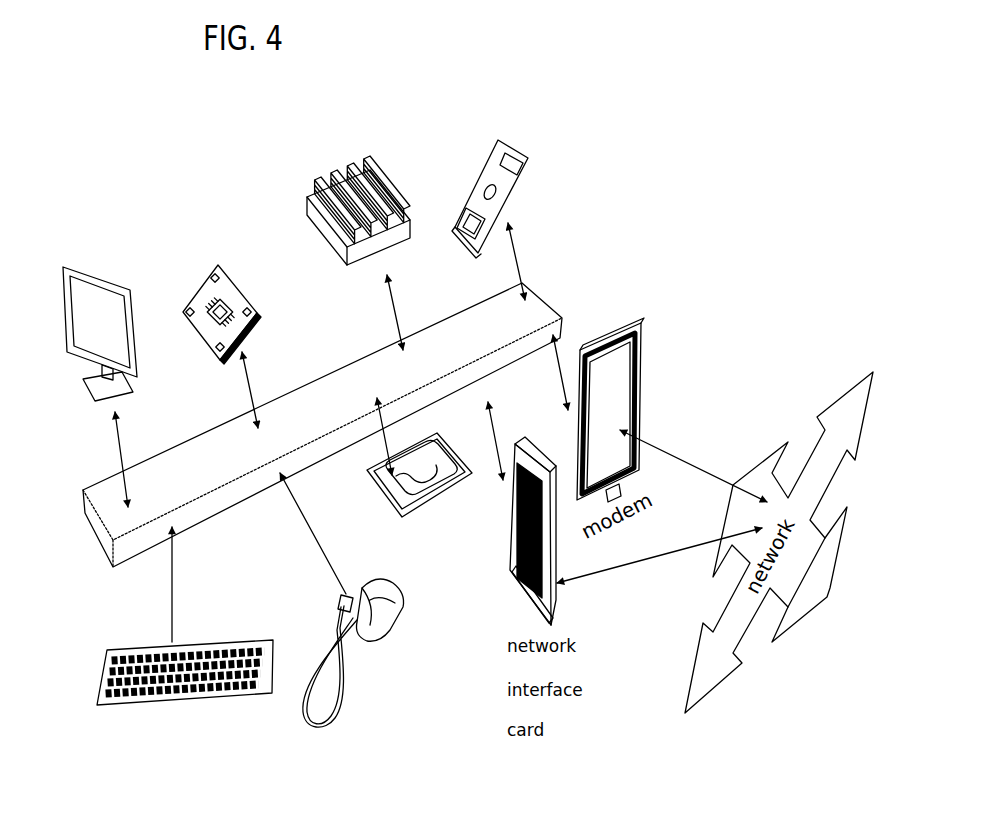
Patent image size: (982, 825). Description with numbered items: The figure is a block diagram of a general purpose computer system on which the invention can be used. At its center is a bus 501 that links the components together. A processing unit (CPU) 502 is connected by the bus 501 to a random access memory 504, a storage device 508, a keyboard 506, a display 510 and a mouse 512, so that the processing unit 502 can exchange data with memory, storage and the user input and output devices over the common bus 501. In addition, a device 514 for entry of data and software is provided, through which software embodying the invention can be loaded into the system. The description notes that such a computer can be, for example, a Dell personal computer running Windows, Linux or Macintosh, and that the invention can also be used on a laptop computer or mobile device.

The bus 501 is at (313, 398).
The processing unit (CPU) 502 is at (222, 265).
The random access memory 504 is at (336, 178).
The keyboard 506 is at (97, 705).
The storage device 508 is at (382, 497).
The display 510 is at (89, 268).
The mouse 512 is at (385, 632).
The device for entry of data and software 514 is at (526, 153).